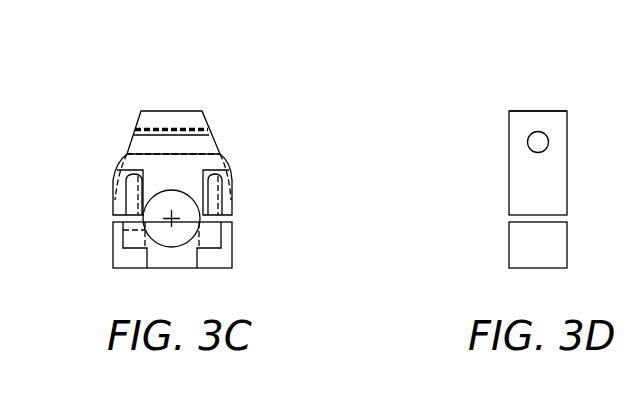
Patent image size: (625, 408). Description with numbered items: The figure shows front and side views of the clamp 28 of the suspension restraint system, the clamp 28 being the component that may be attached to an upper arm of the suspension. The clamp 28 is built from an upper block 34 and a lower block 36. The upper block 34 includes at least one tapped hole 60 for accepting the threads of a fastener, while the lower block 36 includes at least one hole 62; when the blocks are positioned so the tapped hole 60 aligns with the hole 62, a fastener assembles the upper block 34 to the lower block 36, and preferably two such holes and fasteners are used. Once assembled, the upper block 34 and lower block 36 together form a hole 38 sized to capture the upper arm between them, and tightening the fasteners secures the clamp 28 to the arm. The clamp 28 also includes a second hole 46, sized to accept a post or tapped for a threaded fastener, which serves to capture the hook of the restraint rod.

In FIG. 3C, the clamp 28 is at (177, 115).
In FIG. 3D, the clamp 28 is at (552, 120).
In FIG. 3C, the upper block 34 is at (183, 163).
In FIG. 3D, the upper block 34 is at (535, 172).
In FIG. 3C, the lower block 36 is at (173, 252).
In FIG. 3D, the lower block 36 is at (531, 253).
In FIG. 3C, the hole 38 is at (163, 196).
In FIG. 3C, the second hole 46 is at (198, 140).
In FIG. 3D, the second hole 46 is at (533, 137).
In FIG. 3C, the tapped hole 60 is at (130, 196).
In FIG. 3C, the hole 62 is at (132, 237).